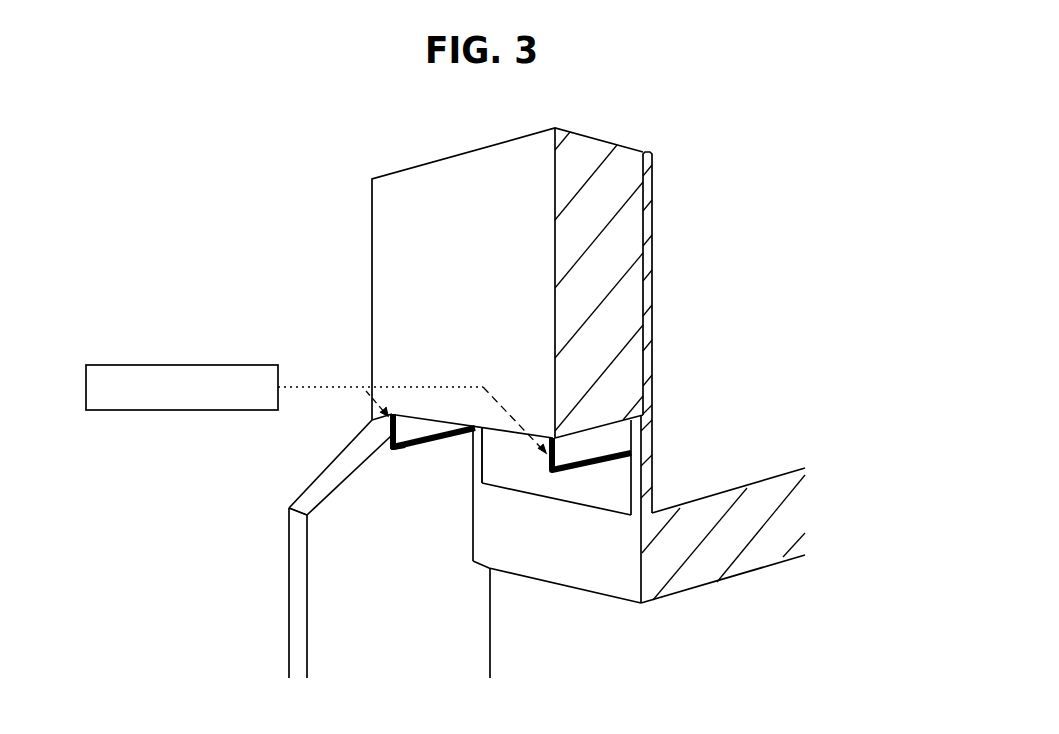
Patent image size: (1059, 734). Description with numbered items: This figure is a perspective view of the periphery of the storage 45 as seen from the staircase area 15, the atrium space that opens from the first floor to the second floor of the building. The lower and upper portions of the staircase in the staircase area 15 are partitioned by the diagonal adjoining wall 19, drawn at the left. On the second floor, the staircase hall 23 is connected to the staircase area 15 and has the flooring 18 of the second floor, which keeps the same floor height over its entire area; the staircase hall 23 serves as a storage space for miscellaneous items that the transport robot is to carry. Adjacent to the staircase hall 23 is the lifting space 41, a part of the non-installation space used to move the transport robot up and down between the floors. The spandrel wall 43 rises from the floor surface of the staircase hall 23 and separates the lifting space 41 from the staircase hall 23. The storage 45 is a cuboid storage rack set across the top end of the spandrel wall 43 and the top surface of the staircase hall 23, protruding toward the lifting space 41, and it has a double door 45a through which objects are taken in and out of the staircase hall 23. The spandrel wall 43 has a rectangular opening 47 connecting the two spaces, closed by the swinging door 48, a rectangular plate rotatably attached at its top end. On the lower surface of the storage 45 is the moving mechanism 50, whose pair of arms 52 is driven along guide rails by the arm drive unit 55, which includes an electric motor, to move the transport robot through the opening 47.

The staircase area 15 is at (298, 454).
The flooring of the second floor 18 is at (767, 560).
The diagonal adjoining wall 19 is at (294, 609).
The staircase hall 23 is at (790, 334).
The lifting space 41 is at (554, 636).
The spandrel wall 43 is at (652, 467).
The storage 45 is at (383, 249).
The double door 45a is at (652, 222).
The opening 47 is at (550, 491).
The swinging door 48 is at (513, 476).
The moving mechanism 50 is at (406, 454).
The arms 52 is at (436, 449).
The arm drive unit 55 is at (263, 364).